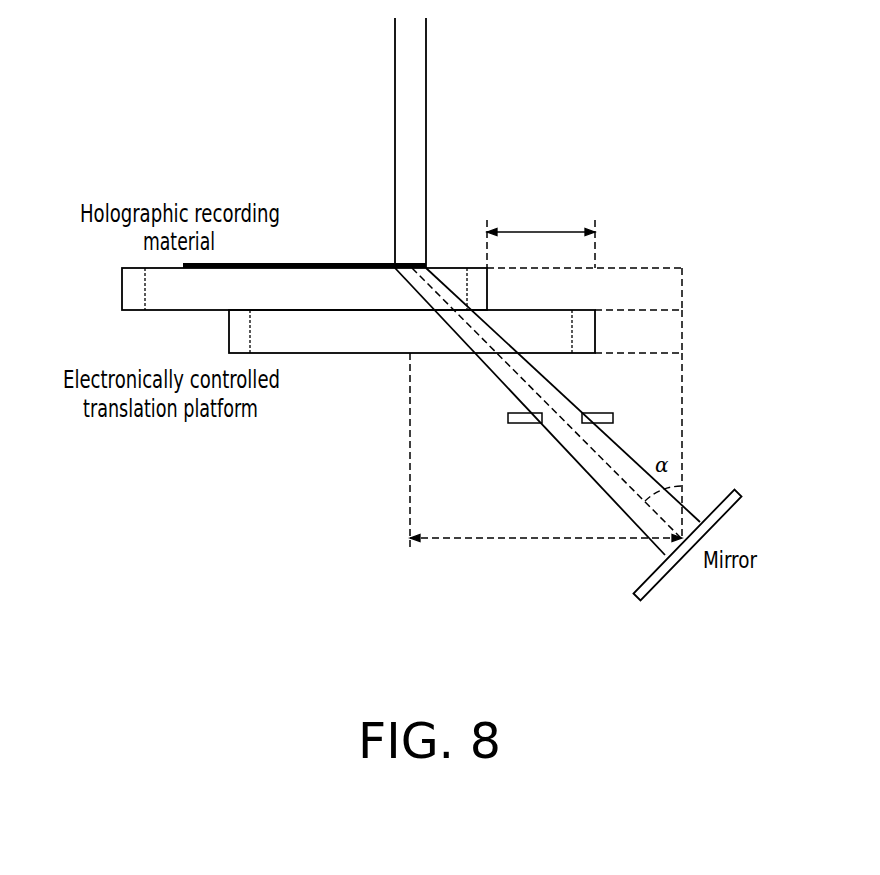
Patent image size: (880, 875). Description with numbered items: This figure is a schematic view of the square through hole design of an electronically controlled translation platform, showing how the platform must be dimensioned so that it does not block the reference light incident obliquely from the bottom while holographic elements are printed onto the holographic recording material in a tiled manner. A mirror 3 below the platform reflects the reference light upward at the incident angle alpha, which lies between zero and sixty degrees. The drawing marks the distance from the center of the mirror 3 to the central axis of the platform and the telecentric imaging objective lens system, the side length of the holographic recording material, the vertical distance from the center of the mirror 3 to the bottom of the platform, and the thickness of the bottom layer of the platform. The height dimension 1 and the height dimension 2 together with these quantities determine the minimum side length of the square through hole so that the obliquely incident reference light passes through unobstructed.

The height h1 / distance L1 dimension 1 is at (562, 450).
The height h2 / half-length L2/2 dimension 2 is at (528, 204).
The height h3 dimension 3 is at (601, 289).